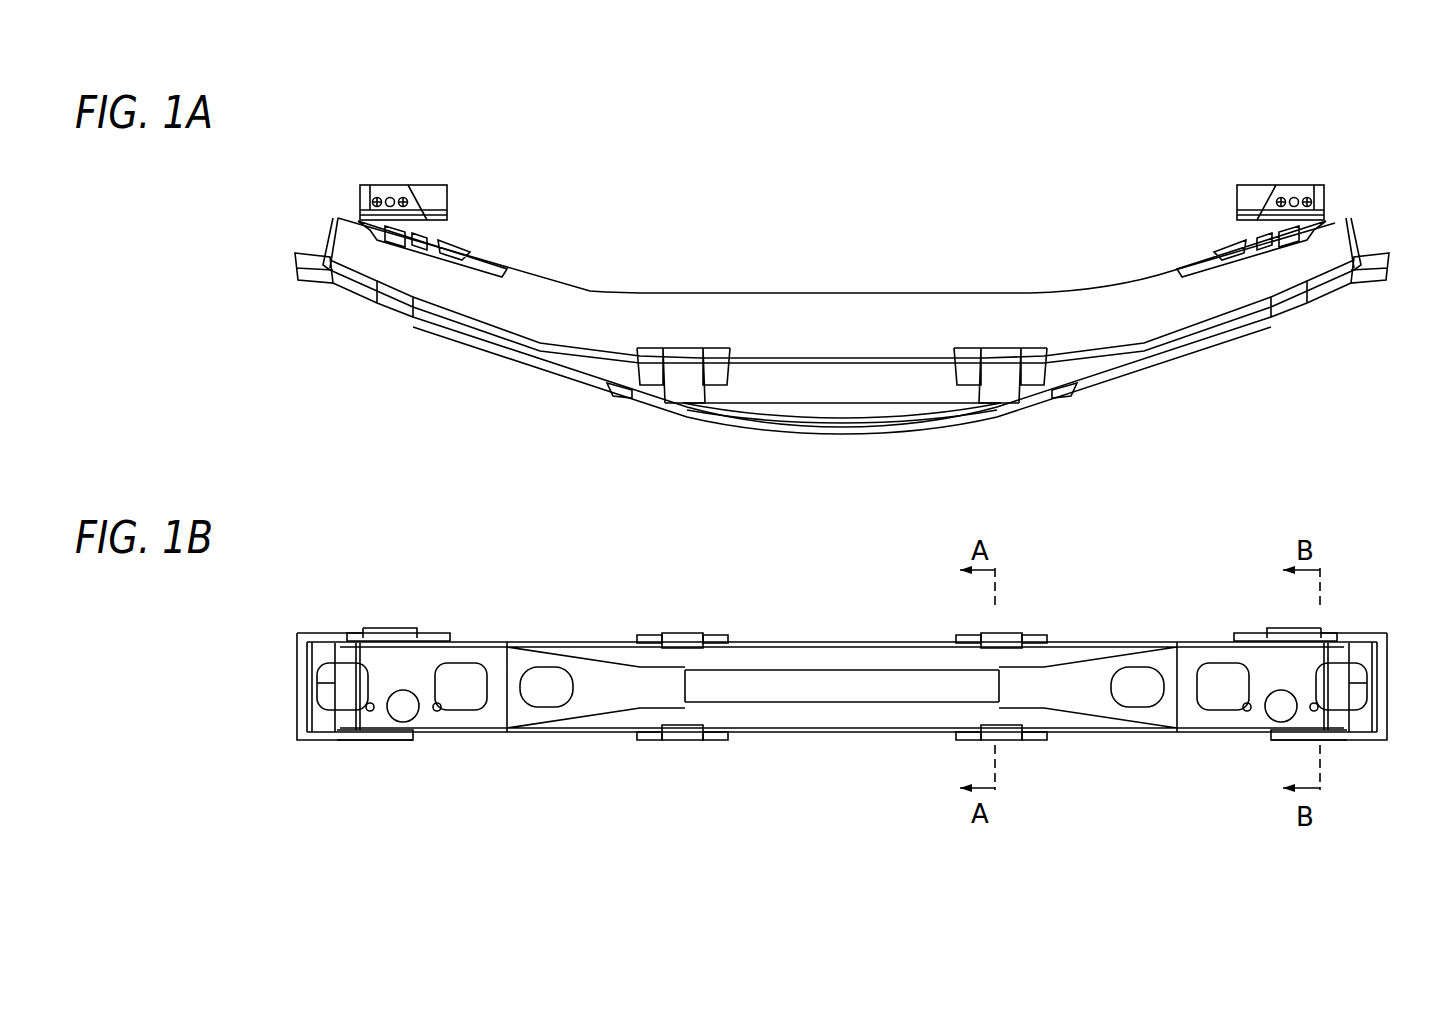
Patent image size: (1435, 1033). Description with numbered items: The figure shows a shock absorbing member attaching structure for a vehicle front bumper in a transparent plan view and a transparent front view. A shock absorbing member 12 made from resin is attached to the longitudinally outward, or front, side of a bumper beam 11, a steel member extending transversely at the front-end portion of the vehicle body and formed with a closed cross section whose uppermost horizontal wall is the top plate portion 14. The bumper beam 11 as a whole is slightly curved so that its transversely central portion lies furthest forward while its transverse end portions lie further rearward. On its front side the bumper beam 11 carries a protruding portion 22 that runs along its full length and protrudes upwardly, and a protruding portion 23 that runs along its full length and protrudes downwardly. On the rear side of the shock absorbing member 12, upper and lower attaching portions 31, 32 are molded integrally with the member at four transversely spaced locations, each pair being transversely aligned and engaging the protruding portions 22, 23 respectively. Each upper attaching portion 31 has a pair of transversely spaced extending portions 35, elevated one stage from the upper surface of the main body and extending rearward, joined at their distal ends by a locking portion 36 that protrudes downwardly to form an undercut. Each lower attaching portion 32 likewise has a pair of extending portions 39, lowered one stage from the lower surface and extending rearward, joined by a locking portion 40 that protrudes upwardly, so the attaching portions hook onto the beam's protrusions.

In FIG. 1A, the bumper beam 11 is at (318, 222).
In FIG. 1B, the bumper beam 11 is at (860, 640).
In FIG. 1A, the shock absorbing member 12 is at (293, 278).
In FIG. 1B, the shock absorbing member 12 is at (292, 662).
In FIG. 1A, the top plate portion 14 is at (843, 300).
In FIG. 1A, the protruding portion 22 is at (557, 353).
In FIG. 1B, the protruding portion 22 is at (767, 643).
In FIG. 1B, the protruding portion 23 is at (782, 735).
In FIG. 1A, the upper attaching portion 31 is at (408, 187).
In FIG. 1B, the upper attaching portion 31 is at (395, 625).
In FIG. 1B, the lower attaching portion 32 is at (363, 745).
In FIG. 1A, the extending portion 35 is at (330, 272).
In FIG. 1B, the extending portion 35 is at (325, 637).
In FIG. 1A, the locking portion 36 is at (353, 277).
In FIG. 1B, the locking portion 36 is at (357, 645).
In FIG. 1B, the extending portion 39 is at (312, 741).
In FIG. 1B, the locking portion 40 is at (315, 712).